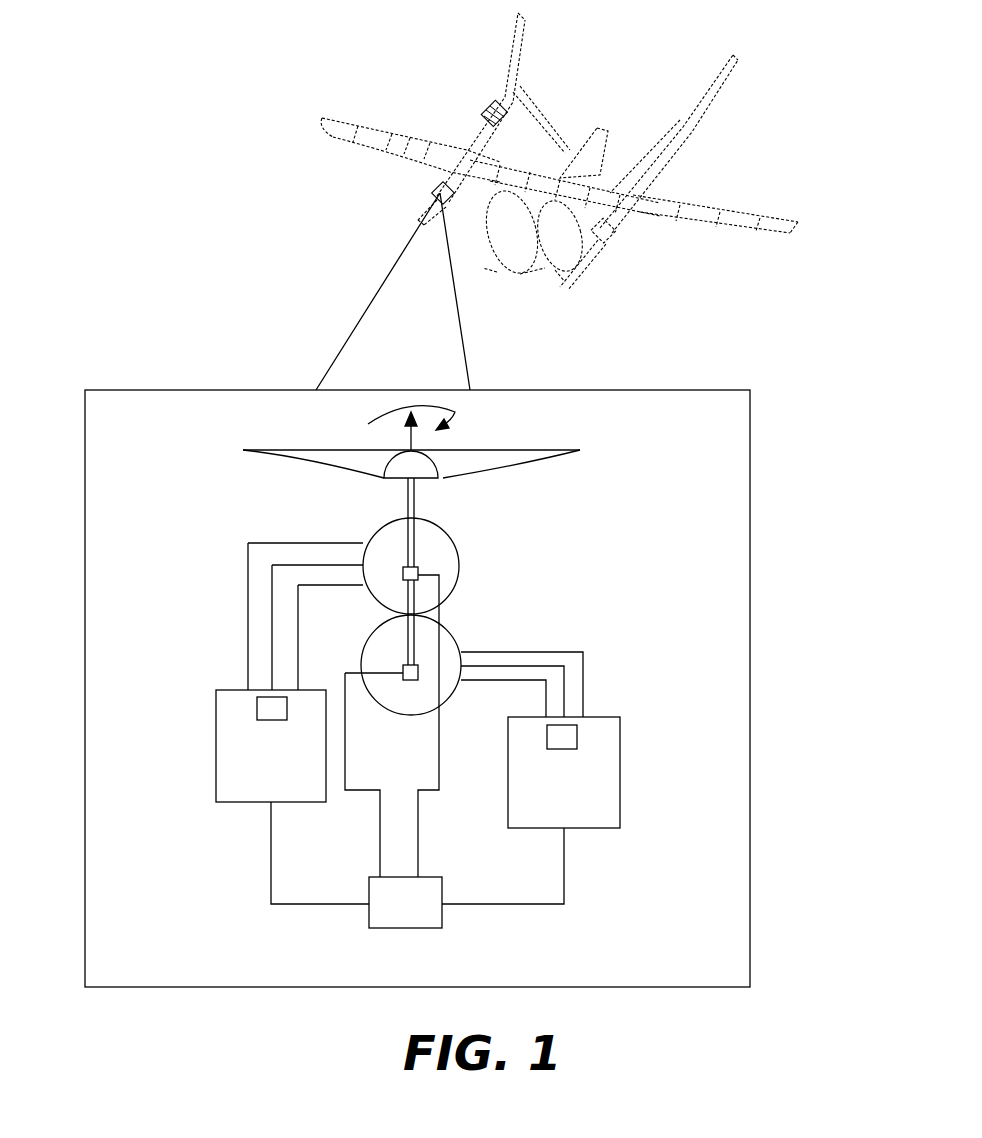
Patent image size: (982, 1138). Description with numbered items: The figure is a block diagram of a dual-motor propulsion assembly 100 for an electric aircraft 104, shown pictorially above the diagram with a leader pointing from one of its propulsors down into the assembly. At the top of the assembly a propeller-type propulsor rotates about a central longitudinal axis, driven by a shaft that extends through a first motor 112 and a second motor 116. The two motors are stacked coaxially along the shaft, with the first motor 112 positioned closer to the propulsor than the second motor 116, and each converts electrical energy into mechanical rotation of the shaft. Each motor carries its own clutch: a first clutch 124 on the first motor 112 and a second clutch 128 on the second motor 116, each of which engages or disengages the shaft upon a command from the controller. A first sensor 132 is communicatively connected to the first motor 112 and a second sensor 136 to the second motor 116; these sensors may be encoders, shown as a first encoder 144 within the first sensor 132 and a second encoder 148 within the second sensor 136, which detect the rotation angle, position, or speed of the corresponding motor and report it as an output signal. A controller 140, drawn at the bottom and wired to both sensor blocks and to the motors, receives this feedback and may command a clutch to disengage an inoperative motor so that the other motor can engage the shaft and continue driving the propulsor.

The dual-motor propulsion assembly 100 is at (750, 903).
The electric aircraft 104 is at (625, 147).
The first motor 112 is at (440, 562).
The second motor 116 is at (373, 635).
The first clutch 124 is at (405, 573).
The second clutch 128 is at (403, 670).
The first sensor 132 is at (257, 768).
The second sensor 136 is at (598, 787).
The controller 140 is at (390, 903).
The first encoder 144 is at (272, 708).
The second encoder 148 is at (567, 745).